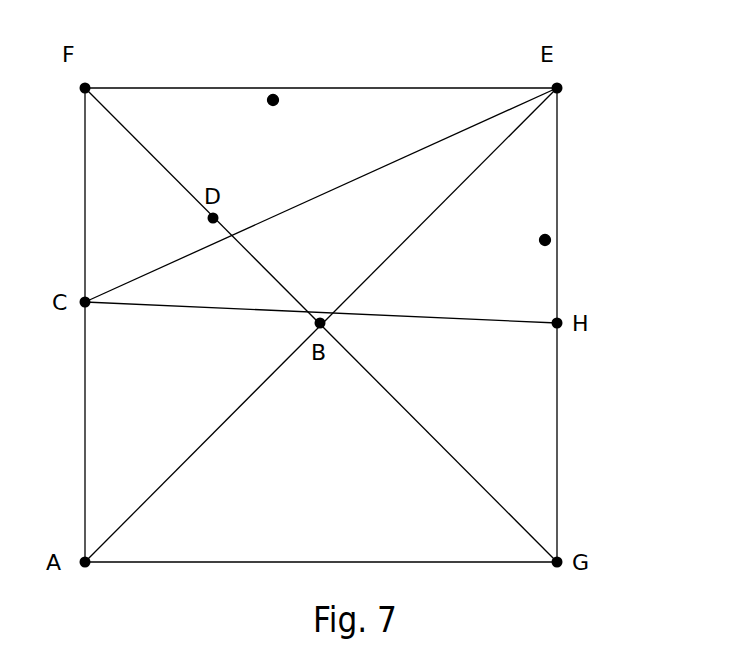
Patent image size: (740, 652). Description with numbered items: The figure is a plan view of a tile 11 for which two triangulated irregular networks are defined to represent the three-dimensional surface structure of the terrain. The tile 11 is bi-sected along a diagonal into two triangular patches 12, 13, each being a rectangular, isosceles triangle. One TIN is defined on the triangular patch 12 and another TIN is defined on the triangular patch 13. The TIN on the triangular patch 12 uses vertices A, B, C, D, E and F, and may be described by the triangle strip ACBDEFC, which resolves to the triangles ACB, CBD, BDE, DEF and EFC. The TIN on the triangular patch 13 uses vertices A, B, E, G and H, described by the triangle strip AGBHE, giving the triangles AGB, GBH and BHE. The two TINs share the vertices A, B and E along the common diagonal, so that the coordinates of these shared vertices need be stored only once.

The tile 11 is at (354, 297).
The triangular patch 12 is at (270, 97).
The triangular patch 13 is at (548, 237).